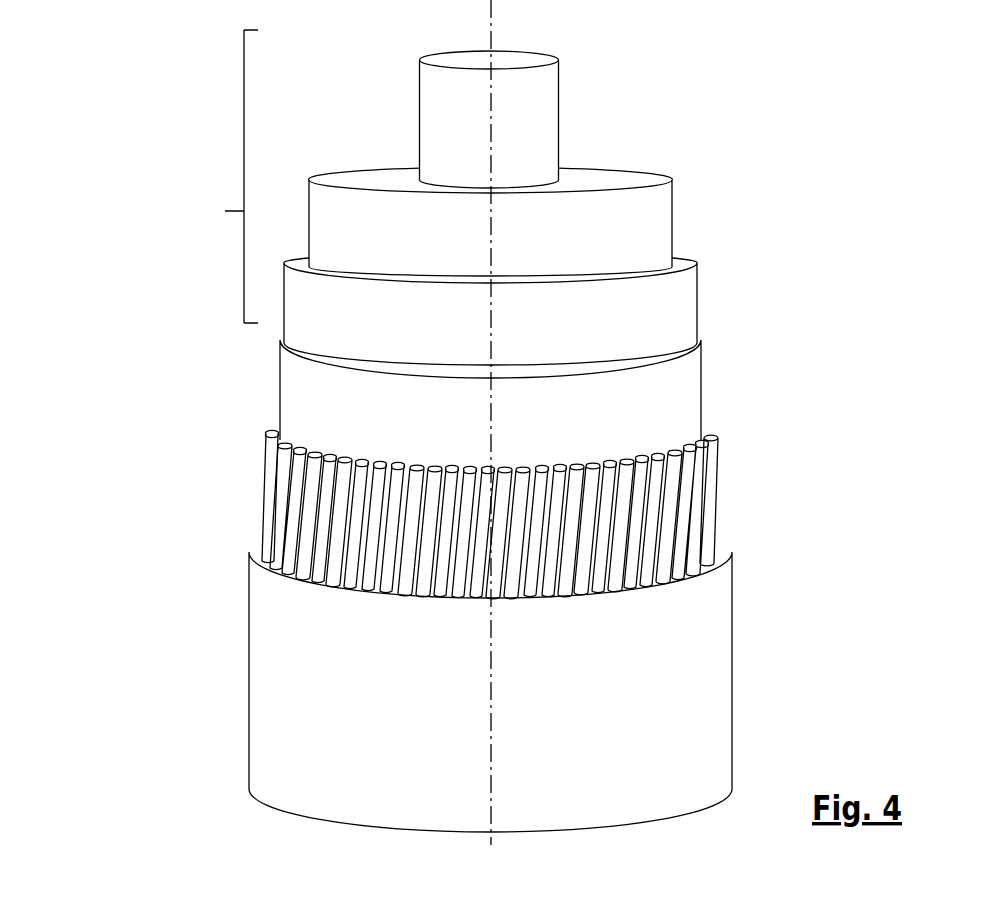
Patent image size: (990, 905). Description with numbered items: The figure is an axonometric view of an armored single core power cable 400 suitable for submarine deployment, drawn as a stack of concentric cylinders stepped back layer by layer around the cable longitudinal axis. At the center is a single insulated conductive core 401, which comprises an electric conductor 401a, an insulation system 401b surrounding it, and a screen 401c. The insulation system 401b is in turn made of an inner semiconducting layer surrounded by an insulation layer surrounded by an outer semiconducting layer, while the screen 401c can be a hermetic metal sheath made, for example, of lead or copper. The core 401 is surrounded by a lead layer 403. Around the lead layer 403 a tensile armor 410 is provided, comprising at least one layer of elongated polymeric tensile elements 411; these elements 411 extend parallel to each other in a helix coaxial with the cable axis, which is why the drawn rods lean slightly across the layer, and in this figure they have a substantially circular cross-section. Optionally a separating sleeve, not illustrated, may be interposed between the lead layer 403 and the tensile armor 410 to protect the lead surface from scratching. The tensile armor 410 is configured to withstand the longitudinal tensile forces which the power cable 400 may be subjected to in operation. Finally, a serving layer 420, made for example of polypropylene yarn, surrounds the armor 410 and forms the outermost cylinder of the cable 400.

The armored single core power cable 400 is at (537, 422).
The single insulated conductive core 401 is at (215, 176).
The electric conductor 401a is at (545, 100).
The insulation system 401b is at (615, 182).
The screen 401c is at (660, 305).
The lead layer 403 is at (303, 388).
The tensile armor 410 is at (497, 514).
The elongated polymeric tensile elements 411 is at (278, 483).
The serving layer 420 is at (688, 668).